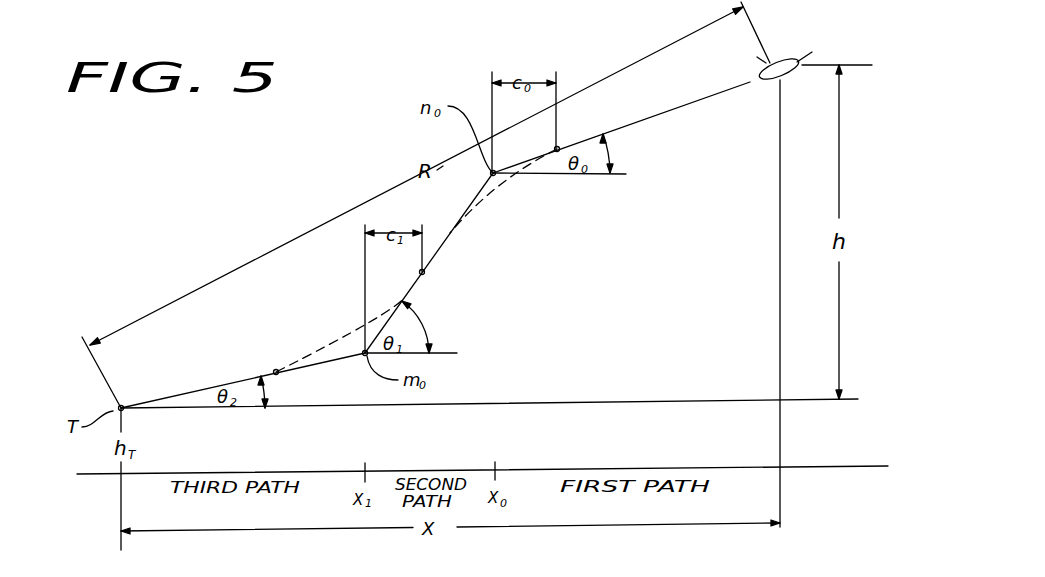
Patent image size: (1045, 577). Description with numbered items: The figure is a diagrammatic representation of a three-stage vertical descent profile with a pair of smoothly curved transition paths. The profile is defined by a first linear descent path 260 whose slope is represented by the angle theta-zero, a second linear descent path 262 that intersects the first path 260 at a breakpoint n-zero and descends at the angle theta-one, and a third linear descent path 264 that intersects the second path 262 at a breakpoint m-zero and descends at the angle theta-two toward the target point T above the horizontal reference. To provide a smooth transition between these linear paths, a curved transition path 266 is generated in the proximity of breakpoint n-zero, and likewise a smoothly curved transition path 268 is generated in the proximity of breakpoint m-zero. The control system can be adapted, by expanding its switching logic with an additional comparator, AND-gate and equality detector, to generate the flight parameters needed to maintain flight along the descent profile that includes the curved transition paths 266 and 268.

The first linear descent path 260 is at (648, 117).
The second linear descent path 262 is at (440, 250).
The third linear descent path 264 is at (173, 396).
The curved transition path 266 is at (505, 187).
The smoothly curved transition path 268 is at (350, 332).